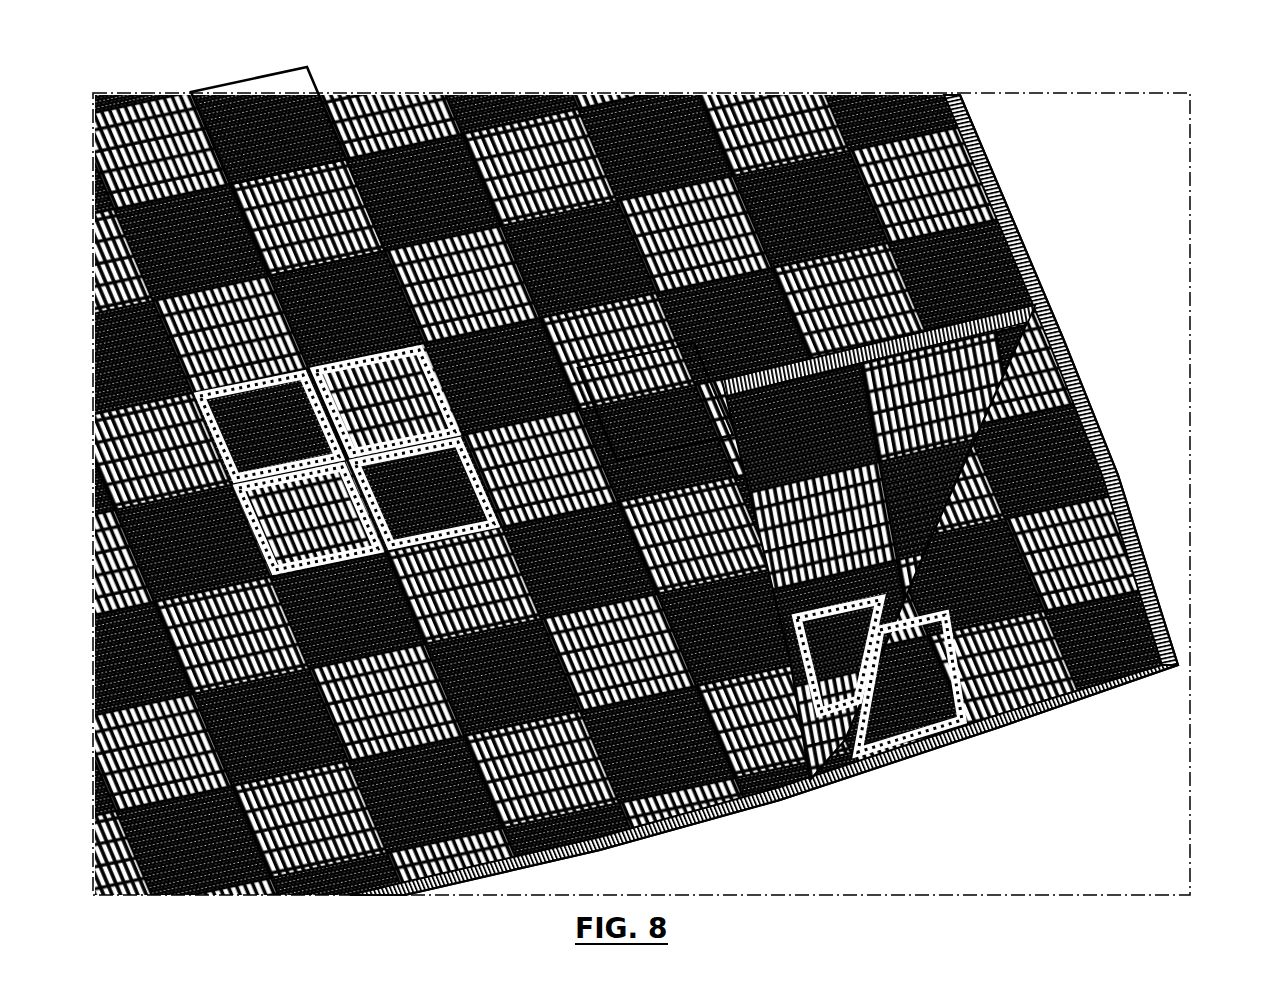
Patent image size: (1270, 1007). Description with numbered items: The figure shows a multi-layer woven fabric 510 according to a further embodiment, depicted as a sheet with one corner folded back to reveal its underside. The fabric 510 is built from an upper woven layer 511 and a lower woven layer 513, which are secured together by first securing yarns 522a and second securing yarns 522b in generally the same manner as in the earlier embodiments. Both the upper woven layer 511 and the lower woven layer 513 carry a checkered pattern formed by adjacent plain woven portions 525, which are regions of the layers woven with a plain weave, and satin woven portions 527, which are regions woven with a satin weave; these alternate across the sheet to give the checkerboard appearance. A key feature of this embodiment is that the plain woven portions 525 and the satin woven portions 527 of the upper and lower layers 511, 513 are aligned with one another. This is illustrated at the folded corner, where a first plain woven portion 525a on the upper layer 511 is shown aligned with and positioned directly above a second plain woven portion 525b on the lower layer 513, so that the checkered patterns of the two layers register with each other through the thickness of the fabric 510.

The multi-layer woven fabric 510 is at (985, 257).
The upper woven layer 511 is at (646, 350).
The lower woven layer 513 is at (1010, 510).
The first securing yarns 522a is at (345, 145).
The second securing yarns 522b is at (320, 262).
The plain woven portions 525 is at (253, 437).
The satin woven portions 527 is at (368, 388).
The first plain woven portion 525a is at (843, 690).
The second plain woven portion 525b is at (910, 712).